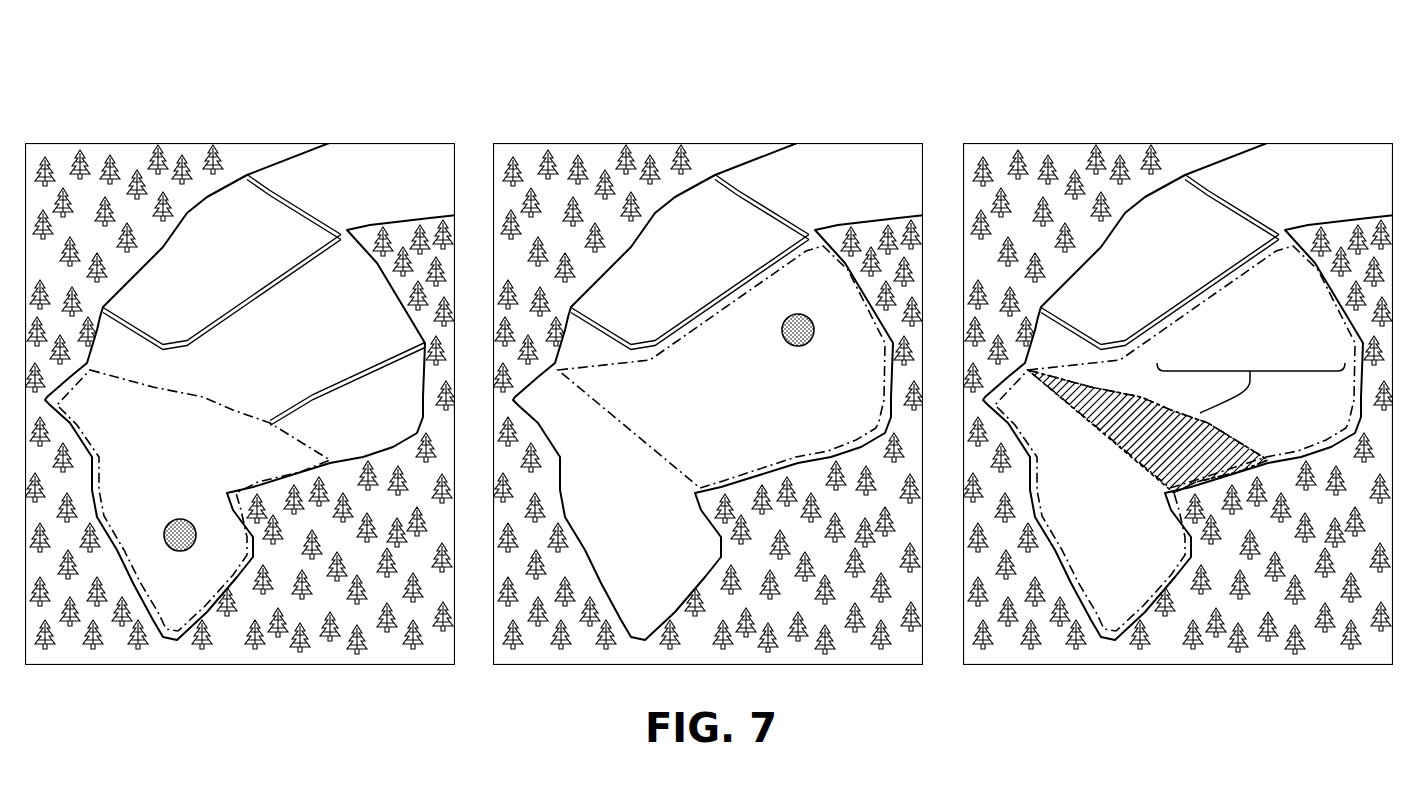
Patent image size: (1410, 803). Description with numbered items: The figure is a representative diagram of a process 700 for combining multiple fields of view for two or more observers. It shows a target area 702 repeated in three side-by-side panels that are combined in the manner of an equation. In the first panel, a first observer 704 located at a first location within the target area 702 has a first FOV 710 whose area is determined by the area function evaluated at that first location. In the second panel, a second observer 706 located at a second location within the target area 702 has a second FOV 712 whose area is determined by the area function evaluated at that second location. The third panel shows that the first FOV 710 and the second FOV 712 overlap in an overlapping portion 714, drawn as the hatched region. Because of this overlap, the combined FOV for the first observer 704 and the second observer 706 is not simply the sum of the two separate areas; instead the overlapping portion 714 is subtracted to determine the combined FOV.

The process 700 is at (990, 85).
The target area 702 is at (393, 142).
The first observer 704 is at (183, 519).
The second observer 706 is at (810, 346).
The first FOV 710 is at (225, 408).
The second FOV 712 is at (613, 430).
The overlapping portion 714 is at (1144, 446).